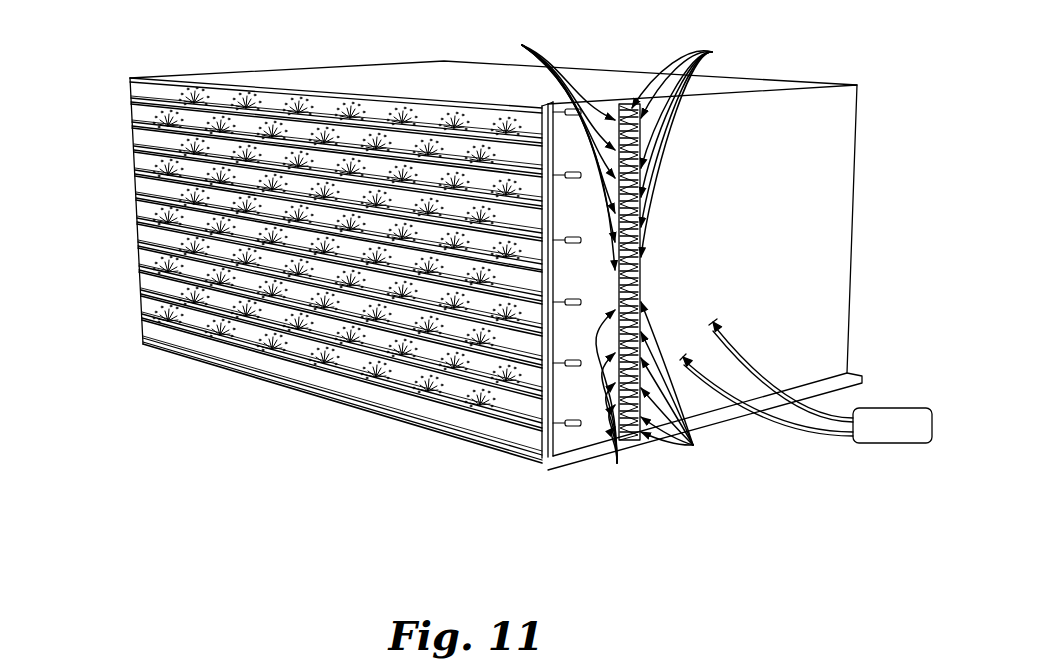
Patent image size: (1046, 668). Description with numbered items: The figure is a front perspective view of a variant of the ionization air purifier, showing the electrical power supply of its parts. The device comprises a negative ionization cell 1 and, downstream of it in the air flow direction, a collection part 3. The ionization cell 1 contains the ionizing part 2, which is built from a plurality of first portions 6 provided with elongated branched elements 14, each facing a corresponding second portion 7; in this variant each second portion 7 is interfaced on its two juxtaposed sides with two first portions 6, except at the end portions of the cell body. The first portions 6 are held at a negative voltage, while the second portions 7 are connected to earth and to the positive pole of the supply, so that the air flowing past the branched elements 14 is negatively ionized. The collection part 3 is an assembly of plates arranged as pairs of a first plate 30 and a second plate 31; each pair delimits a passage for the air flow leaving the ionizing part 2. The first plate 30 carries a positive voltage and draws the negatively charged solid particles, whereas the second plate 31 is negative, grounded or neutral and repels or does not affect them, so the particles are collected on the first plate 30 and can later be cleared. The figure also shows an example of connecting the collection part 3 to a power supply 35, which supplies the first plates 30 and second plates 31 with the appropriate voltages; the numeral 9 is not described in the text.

The negative ionization cell 1 is at (647, 469).
The ionizing part 2 is at (470, 461).
The collection part 3 is at (395, 78).
The first portion 6 is at (146, 119).
The second portion 7 is at (168, 98).
The support column 9 is at (568, 394).
The elongated branched element 14 is at (275, 137).
The first plate 30 is at (691, 255).
The second plate 31 is at (560, 267).
The power supply 35 is at (895, 405).